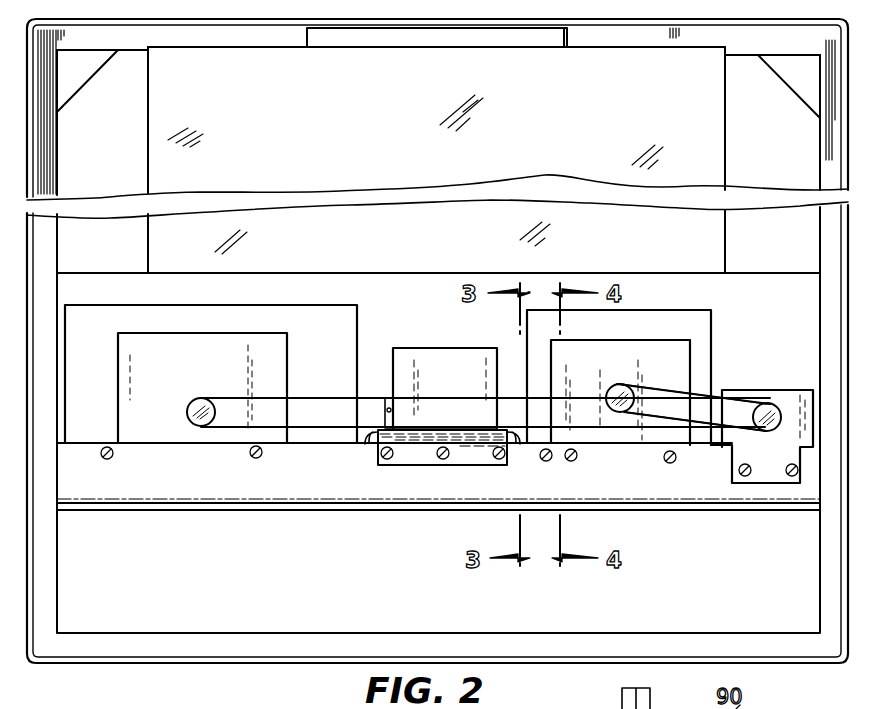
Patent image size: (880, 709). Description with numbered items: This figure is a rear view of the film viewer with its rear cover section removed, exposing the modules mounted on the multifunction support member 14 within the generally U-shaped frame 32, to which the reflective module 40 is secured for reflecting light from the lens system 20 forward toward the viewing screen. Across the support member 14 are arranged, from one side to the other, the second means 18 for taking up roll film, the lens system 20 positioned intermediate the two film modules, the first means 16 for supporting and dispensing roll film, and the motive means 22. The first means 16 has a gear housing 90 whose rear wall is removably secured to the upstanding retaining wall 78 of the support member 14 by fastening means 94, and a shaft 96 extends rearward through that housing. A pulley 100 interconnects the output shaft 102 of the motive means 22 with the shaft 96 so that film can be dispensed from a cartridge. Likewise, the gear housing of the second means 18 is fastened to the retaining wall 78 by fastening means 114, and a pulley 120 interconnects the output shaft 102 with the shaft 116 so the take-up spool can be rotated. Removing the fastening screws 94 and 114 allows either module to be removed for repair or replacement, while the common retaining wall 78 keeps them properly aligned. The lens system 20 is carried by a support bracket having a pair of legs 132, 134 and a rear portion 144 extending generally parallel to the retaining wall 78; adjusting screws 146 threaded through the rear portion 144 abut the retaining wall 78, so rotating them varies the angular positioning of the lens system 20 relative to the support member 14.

The multifunction support member 14 is at (392, 513).
The first means 16 is at (715, 331).
The second means 18 is at (340, 298).
The lens system 20 is at (425, 318).
The motive means 22 is at (776, 391).
The U-shaped frame 32 is at (30, 427).
The reflective module 40 is at (727, 158).
The upstanding retaining wall 78 is at (283, 490).
The gear housing 90 is at (680, 384).
The fastening means 94 is at (548, 462).
The shaft 96 is at (610, 385).
The pulley 100 is at (663, 395).
The output shaft 102 is at (782, 426).
The fastening means 114 is at (116, 460).
The shaft 116 is at (195, 405).
The pulley 120 is at (348, 396).
The leg 132 is at (522, 428).
The leg 134 is at (368, 443).
The rear portion 144 is at (467, 463).
The adjusting screws 146 is at (428, 466).